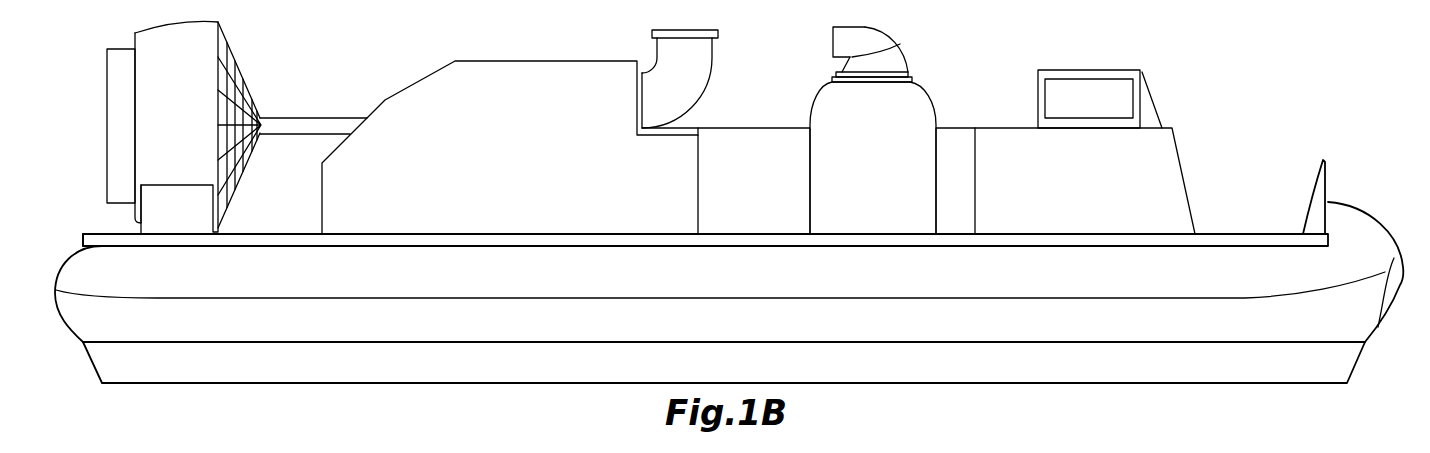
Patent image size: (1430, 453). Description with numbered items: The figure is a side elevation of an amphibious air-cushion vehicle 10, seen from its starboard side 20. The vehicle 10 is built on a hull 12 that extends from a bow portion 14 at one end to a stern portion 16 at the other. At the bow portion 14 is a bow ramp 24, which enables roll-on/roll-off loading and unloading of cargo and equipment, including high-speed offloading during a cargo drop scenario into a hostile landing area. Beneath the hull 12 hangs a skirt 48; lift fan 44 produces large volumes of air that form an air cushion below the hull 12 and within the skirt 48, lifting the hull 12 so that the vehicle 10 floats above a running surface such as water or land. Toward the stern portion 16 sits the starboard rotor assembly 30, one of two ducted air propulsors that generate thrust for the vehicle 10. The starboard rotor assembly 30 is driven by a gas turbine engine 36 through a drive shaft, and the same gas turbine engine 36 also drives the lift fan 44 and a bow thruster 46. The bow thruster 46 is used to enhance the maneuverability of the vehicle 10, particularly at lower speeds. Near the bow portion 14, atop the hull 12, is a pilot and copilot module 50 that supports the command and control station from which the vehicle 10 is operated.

The amphibious air-cushion vehicle 10 is at (1187, 71).
The hull 12 is at (1224, 238).
The bow portion 14 is at (1266, 234).
The stern portion 16 is at (101, 234).
The starboard side 20 is at (775, 284).
The bow ramp 24 is at (1323, 183).
The starboard rotor assembly 30 is at (190, 133).
The gas turbine engine 36 is at (528, 183).
The lift fan 44 is at (885, 188).
The bow thruster 46 is at (895, 57).
The skirt 48 is at (379, 320).
The pilot and copilot module 50 is at (1088, 191).